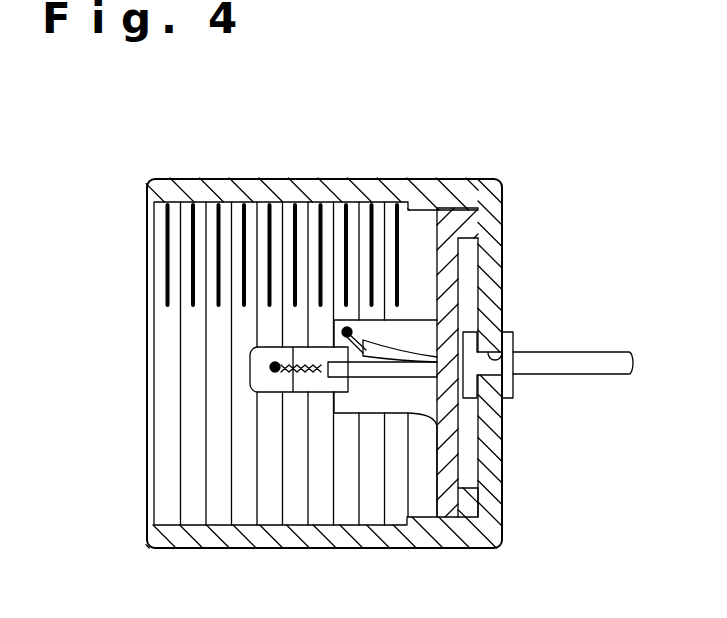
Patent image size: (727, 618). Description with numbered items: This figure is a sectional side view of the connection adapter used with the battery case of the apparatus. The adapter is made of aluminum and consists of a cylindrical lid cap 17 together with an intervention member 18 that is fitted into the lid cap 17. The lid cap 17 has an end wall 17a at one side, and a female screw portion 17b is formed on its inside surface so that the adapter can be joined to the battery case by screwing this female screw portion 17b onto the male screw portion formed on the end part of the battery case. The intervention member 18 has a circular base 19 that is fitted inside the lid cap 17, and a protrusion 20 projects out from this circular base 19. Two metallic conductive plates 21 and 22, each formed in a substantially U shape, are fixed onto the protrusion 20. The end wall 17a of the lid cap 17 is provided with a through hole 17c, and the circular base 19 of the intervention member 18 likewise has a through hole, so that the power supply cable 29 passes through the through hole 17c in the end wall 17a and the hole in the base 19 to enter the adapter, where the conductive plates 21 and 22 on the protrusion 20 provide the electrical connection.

The cylindrical lid cap 17 is at (327, 178).
The end wall 17a is at (489, 252).
The female screw portion 17b is at (168, 203).
The through hole 17c is at (515, 350).
The intervention member 18 is at (452, 502).
The circular base 19 is at (437, 457).
The protrusion 20 is at (407, 327).
The conductive plate 21 is at (347, 414).
The conductive plate 22 is at (270, 347).
The power supply cable 29 is at (593, 352).